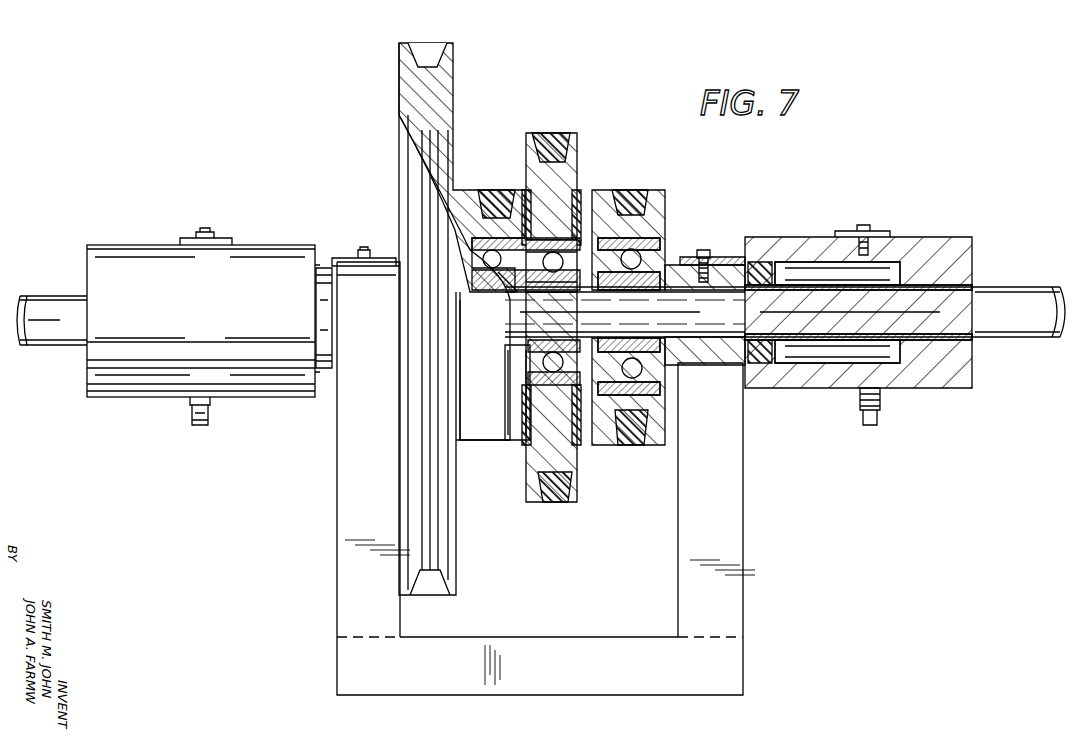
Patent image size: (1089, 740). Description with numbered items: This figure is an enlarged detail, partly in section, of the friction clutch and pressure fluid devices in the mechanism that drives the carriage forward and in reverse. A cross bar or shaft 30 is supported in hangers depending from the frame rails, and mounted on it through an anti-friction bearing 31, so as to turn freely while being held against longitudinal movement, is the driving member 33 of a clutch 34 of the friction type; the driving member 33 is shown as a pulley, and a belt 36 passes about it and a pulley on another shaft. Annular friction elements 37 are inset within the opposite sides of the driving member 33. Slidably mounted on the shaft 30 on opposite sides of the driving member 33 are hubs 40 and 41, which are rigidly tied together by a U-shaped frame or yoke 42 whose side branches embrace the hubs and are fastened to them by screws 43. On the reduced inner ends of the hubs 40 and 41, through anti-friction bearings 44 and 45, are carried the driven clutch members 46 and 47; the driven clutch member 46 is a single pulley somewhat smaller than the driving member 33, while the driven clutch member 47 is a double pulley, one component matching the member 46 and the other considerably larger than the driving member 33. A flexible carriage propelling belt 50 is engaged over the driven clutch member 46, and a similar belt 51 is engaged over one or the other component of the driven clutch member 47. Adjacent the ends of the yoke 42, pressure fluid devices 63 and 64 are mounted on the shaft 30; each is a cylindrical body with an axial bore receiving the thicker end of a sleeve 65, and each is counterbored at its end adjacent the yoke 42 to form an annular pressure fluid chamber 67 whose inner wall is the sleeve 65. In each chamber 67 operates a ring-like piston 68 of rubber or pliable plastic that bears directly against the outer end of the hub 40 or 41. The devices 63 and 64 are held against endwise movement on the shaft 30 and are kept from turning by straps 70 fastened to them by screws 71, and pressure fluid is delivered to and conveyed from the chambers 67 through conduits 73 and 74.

The cross bar or shaft 30 is at (1000, 292).
The anti-friction bearing 31 is at (556, 270).
The driving member 33 is at (578, 152).
The clutch 34 is at (526, 498).
The belt 36 is at (548, 132).
The annular friction elements 37 is at (526, 190).
The hub 40 is at (700, 268).
The hub 41 is at (324, 266).
The U-shaped frame or yoke 42 is at (743, 520).
The screws 43 is at (364, 254).
The anti-friction bearing 44 is at (630, 272).
The anti-friction bearing 45 is at (490, 258).
The driven clutch member 46 is at (660, 202).
The driven clutch member 47 is at (465, 442).
The carriage propelling element or belt 50 is at (628, 446).
The carriage propelling element or belt 51 is at (486, 440).
The pressure fluid device 63 is at (915, 240).
The pressure fluid device 64 is at (118, 246).
The sleeve 65 is at (940, 340).
The annular pressure fluid chamber 67 is at (815, 352).
The ring-like piston 68 is at (318, 372).
The strap 70 is at (228, 240).
The screws 71 is at (198, 232).
The conduit 73 is at (880, 415).
The conduit 74 is at (195, 415).